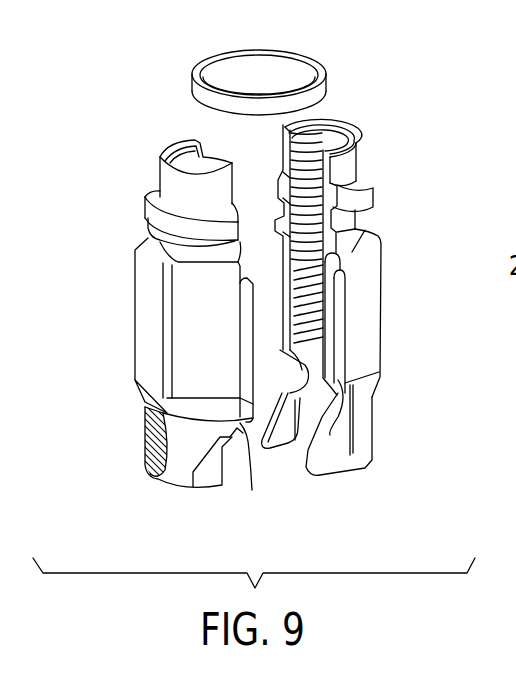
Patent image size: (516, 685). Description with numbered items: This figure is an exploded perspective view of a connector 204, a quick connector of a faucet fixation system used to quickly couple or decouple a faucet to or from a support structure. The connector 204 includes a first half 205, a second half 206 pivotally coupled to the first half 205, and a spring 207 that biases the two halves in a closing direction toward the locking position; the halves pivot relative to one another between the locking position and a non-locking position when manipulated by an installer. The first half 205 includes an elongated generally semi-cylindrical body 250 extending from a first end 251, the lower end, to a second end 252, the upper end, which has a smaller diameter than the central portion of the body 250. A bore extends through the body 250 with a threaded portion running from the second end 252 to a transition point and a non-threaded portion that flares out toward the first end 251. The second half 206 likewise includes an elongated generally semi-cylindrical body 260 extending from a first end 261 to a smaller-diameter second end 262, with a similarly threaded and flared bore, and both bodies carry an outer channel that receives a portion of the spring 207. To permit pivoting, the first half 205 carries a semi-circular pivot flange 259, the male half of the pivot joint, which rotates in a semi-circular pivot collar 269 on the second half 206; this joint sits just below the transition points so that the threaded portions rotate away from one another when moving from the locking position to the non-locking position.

The connector 204 is at (120, 450).
The first half 205 is at (135, 393).
The second half 206 is at (390, 408).
The spring 207 is at (303, 44).
The body 250 is at (148, 327).
The first end 251 is at (180, 468).
The second end 252 is at (178, 183).
The pivot flange 259 is at (236, 427).
The body 260 is at (372, 318).
The first end 261 is at (350, 457).
The second end 262 is at (347, 170).
The pivot collar 269 is at (343, 423).